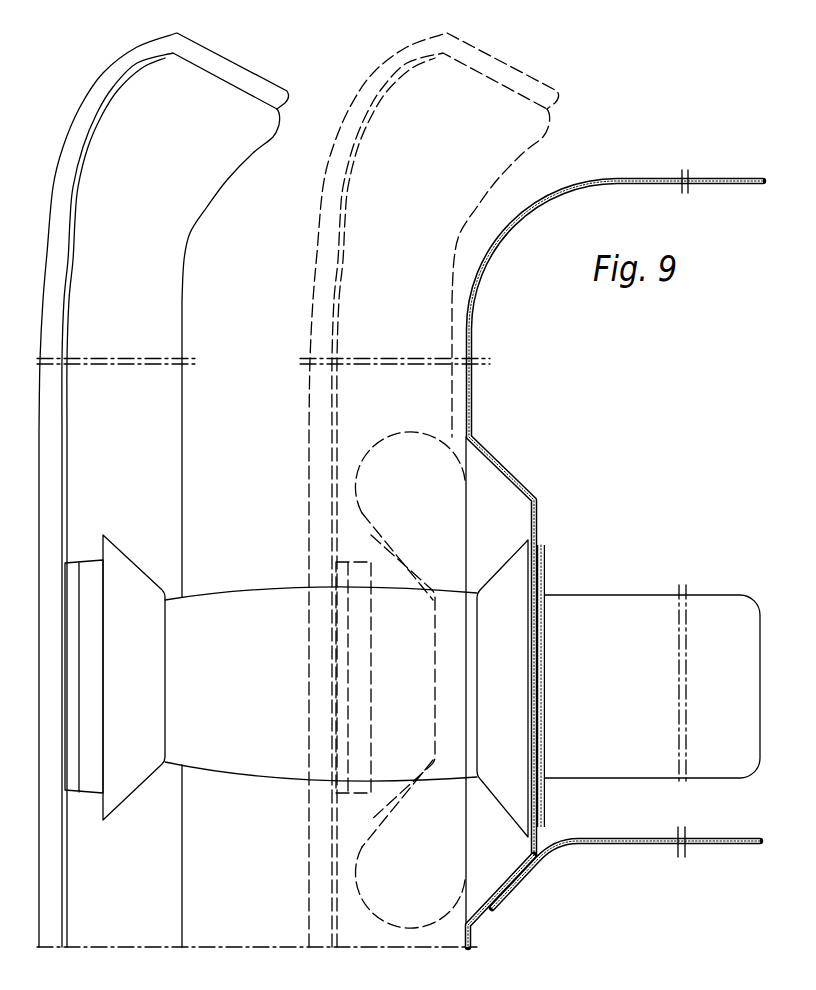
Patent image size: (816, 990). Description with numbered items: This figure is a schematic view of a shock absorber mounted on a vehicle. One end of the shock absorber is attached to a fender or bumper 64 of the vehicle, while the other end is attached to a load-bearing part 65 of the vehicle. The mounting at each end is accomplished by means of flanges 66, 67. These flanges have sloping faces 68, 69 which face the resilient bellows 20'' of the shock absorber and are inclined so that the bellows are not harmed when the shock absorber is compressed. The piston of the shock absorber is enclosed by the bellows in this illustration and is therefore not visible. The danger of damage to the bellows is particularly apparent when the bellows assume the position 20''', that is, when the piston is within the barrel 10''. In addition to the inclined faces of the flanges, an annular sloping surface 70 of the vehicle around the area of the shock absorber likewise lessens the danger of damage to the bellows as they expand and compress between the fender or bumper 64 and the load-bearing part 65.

The fender or bumper 64 is at (175, 345).
The resilient bellows 20'' is at (321, 663).
The bellows in compressed position 20''' is at (434, 490).
The annular sloping surface 70 is at (500, 463).
The flange 67 is at (543, 560).
The barrel 10'' is at (652, 664).
The sloping face 69 is at (497, 810).
The load-bearing part 65 is at (598, 842).
The flange 66 is at (85, 560).
The sloping face 68 is at (120, 807).